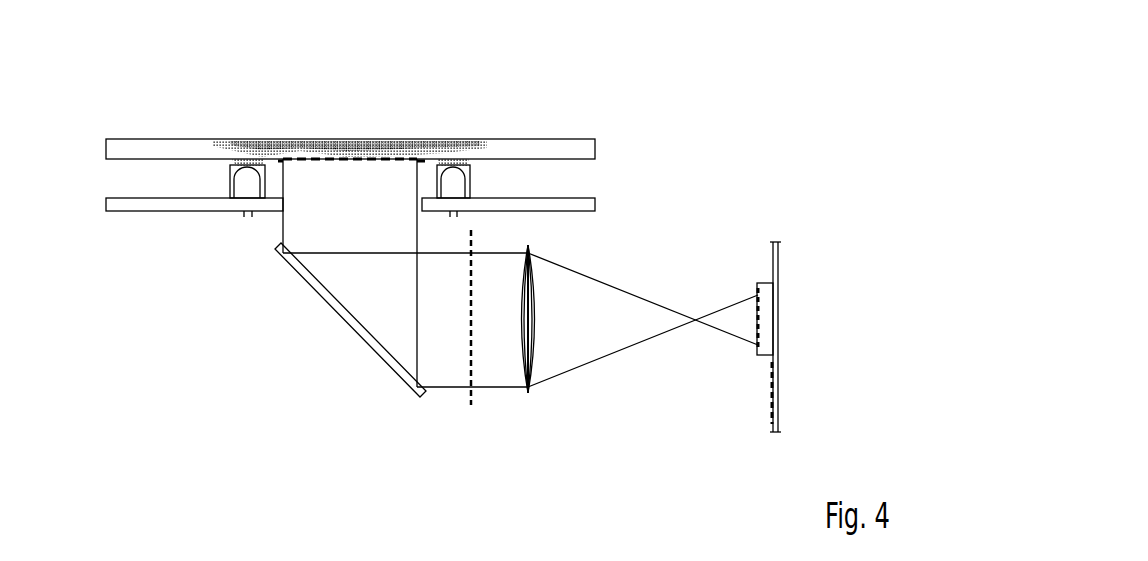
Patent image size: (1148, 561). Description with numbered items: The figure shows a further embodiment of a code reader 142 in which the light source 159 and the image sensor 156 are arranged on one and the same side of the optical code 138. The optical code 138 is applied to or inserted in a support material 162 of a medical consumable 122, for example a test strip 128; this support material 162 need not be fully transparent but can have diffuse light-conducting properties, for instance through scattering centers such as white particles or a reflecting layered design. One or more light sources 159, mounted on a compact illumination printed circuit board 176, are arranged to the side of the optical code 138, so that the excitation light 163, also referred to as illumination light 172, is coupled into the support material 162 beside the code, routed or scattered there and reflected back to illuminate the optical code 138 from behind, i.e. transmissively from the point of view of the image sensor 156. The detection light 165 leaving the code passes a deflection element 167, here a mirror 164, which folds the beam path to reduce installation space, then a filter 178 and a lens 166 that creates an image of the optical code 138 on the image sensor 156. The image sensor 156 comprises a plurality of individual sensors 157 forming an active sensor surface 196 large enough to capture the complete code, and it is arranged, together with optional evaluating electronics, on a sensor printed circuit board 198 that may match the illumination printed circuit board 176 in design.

The code reader 142 is at (699, 94).
The medical consumable 122 is at (452, 142).
The test strip 128 is at (452, 142).
The support material 162 is at (597, 145).
The excitation light 163 is at (349, 109).
The illumination light 172 is at (430, 135).
The illumination printed circuit board 176 is at (597, 203).
The light source 159 is at (243, 187).
The optical code 138 is at (344, 166).
The mirror 164 is at (318, 320).
The deflection element 167 is at (345, 322).
The detection light 165 is at (637, 295).
The lens 166 is at (532, 357).
The filter 178 is at (467, 397).
The image sensor 156 is at (768, 282).
The active sensor surface 196 is at (748, 295).
The individual sensors 157 is at (752, 335).
The sensor printed circuit board 198 is at (780, 380).